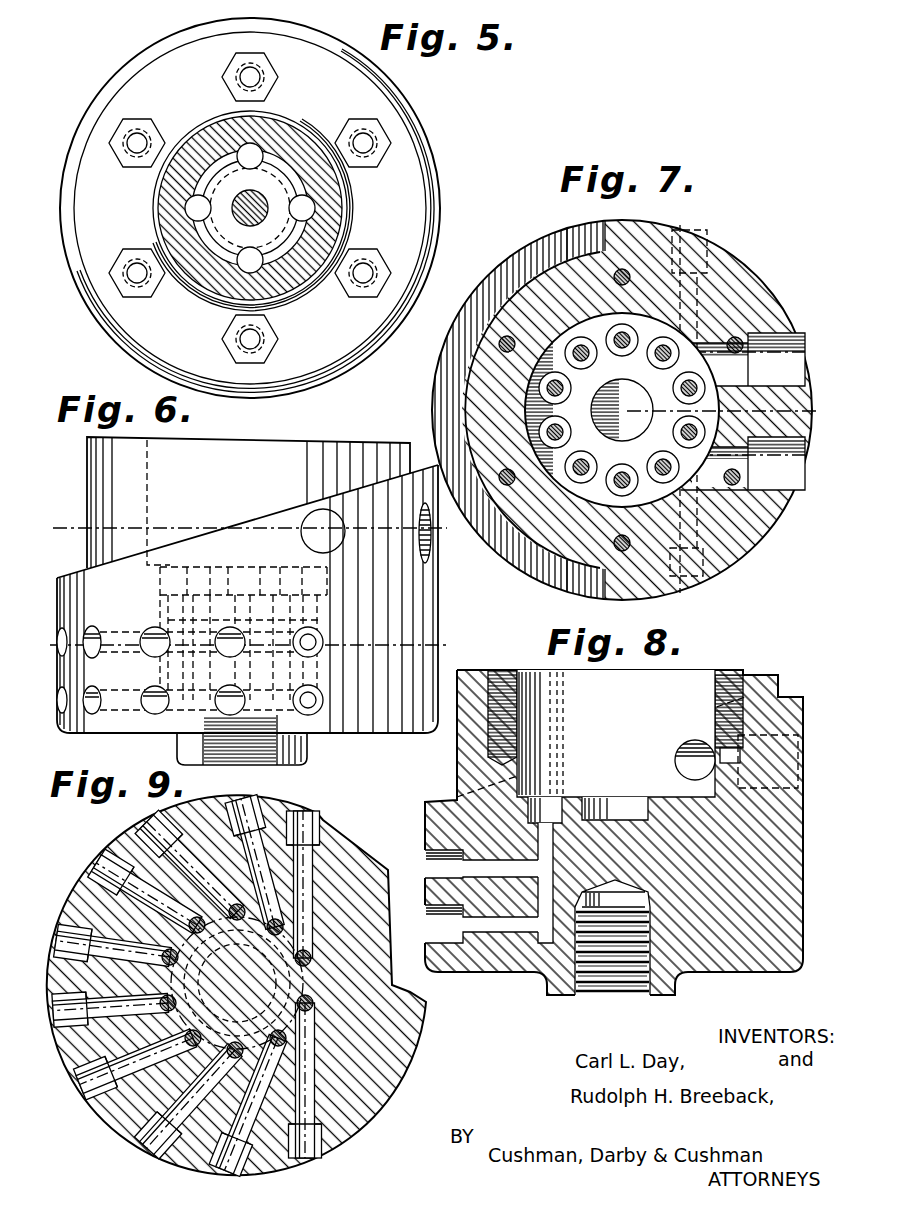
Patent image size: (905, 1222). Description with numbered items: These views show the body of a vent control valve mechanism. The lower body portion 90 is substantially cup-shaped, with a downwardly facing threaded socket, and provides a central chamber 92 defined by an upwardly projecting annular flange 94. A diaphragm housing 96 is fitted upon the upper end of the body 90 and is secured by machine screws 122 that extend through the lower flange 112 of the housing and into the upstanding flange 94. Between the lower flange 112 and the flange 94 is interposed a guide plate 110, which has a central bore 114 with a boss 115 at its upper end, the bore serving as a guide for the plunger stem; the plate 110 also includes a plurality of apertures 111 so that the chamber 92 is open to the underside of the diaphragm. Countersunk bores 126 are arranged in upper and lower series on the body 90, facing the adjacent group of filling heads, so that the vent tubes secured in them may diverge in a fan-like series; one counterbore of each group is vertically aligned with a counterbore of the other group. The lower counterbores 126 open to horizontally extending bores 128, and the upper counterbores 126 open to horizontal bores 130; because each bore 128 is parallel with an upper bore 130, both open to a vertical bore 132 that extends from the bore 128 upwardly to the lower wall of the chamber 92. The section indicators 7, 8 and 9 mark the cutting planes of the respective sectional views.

In FIG. 6, the section line 7- 7 is at (53, 505).
In FIG. 7, the section line 8- 8 is at (480, 372).
In FIG. 6, the section line 9- 9 is at (50, 625).
In FIG. 9, the lower body portion 90 is at (383, 1058).
In FIG. 6, the central chamber 92 is at (148, 480).
In FIG. 7, the central chamber 92 is at (650, 495).
In FIG. 8, the central chamber 92 is at (693, 690).
In FIG. 6, the upwardly projecting annular flange 94 is at (355, 452).
In FIG. 7, the upwardly projecting annular flange 94 is at (725, 287).
In FIG. 8, the upwardly projecting annular flange 94 is at (752, 688).
In FIG. 5, the diaphragm housing 96 is at (388, 182).
In FIG. 5, the guide plate 110 is at (335, 203).
In FIG. 5, the apertures 111 is at (306, 214).
In FIG. 5, the lower flange 112 is at (337, 208).
In FIG. 5, the central bore 114 is at (258, 194).
In FIG. 5, the boss 115 is at (222, 246).
In FIG. 5, the machine screws 122 is at (375, 138).
In FIG. 6, the countersunk bores 126 is at (91, 708).
In FIG. 7, the countersunk bores 126 is at (700, 236).
In FIG. 8, the countersunk bores 126 is at (430, 858).
In FIG. 9, the countersunk bores 126 is at (97, 862).
In FIG. 6, the horizontally extending bores 128 is at (310, 710).
In FIG. 8, the horizontally extending bores 128 is at (500, 935).
In FIG. 6, the horizontal bores 130 is at (316, 648).
In FIG. 7, the horizontal bores 130 is at (578, 476).
In FIG. 8, the horizontal bores 130 is at (453, 834).
In FIG. 9, the horizontal bores 130 is at (180, 1093).
In FIG. 6, the vertical bore 132 is at (318, 608).
In FIG. 7, the vertical bore 132 is at (559, 390).
In FIG. 8, the vertical bore 132 is at (545, 825).
In FIG. 9, the vertical bore 132 is at (321, 983).